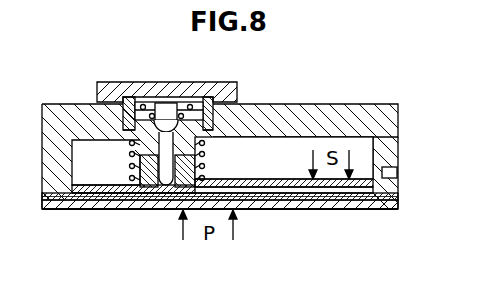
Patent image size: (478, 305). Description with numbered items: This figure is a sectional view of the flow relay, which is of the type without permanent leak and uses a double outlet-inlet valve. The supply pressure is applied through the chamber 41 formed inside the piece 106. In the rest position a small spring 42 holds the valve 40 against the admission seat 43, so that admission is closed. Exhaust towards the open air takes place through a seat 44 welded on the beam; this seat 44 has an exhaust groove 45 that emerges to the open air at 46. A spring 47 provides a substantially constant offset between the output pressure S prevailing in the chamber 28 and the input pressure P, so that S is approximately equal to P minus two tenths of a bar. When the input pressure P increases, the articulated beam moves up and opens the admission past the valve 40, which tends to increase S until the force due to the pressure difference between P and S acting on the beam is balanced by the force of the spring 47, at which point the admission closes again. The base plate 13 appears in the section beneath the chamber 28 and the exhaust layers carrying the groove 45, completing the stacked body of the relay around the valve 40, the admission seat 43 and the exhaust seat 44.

The base plate 13 is at (113, 197).
The chamber 28 is at (302, 160).
The valve 40 is at (159, 156).
The chamber 41 is at (152, 102).
The small spring 42 is at (192, 101).
The admission seat 43 is at (217, 128).
The seat 44 is at (206, 163).
The exhaust groove 45 is at (338, 194).
The open air outlet 46 is at (397, 190).
The spring 47 is at (129, 167).
The piece 106 is at (213, 124).